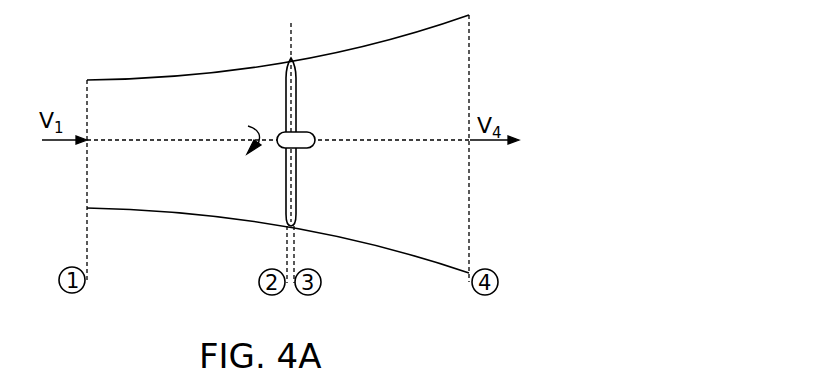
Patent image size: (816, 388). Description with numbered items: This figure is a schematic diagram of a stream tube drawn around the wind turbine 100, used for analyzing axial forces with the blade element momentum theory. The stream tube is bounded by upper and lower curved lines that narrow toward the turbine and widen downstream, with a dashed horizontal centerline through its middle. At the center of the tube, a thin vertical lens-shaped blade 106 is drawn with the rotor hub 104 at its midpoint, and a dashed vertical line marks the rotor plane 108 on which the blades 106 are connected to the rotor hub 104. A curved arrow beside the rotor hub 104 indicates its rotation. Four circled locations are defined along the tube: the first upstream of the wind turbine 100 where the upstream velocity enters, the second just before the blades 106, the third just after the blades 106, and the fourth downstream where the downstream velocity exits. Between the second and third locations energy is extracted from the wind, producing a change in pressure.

The wind turbine 100 is at (337, 98).
The rotor hub 104 is at (311, 147).
The blades 106 is at (286, 95).
The rotor plane 108 is at (292, 32).